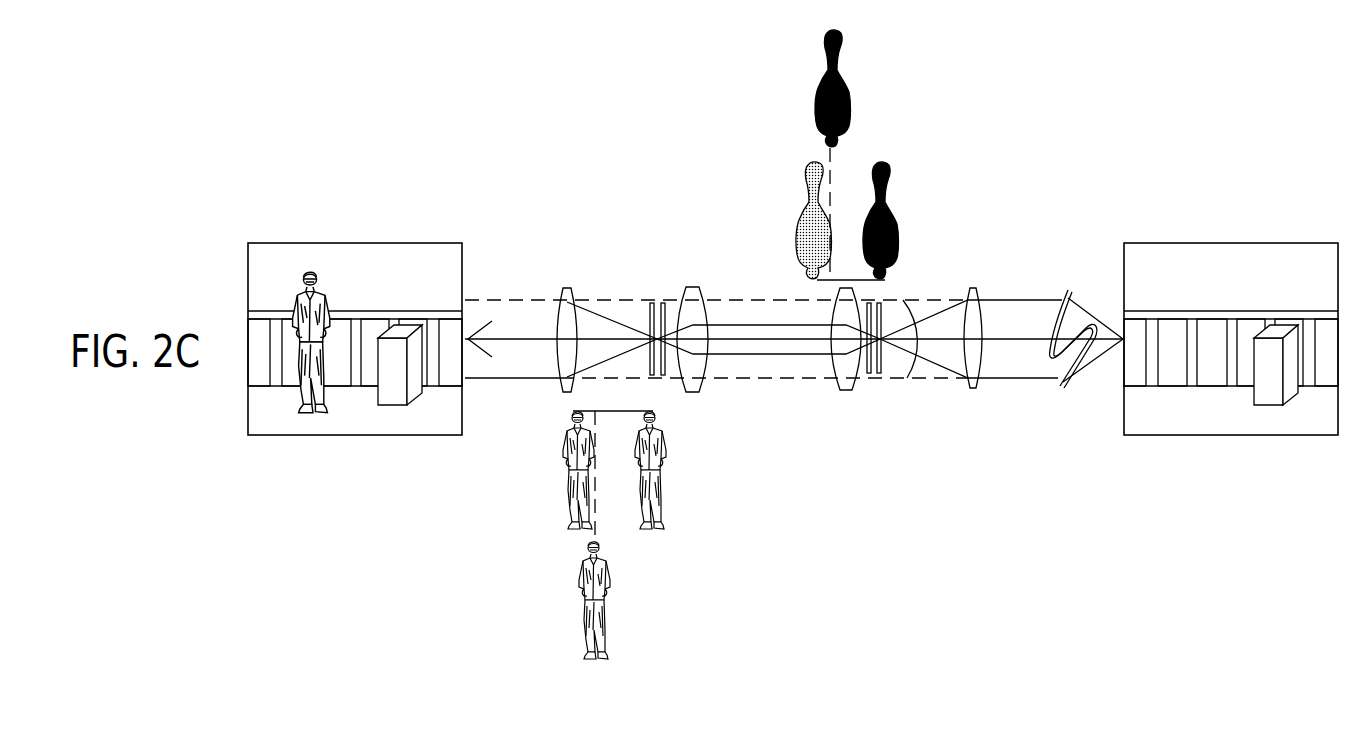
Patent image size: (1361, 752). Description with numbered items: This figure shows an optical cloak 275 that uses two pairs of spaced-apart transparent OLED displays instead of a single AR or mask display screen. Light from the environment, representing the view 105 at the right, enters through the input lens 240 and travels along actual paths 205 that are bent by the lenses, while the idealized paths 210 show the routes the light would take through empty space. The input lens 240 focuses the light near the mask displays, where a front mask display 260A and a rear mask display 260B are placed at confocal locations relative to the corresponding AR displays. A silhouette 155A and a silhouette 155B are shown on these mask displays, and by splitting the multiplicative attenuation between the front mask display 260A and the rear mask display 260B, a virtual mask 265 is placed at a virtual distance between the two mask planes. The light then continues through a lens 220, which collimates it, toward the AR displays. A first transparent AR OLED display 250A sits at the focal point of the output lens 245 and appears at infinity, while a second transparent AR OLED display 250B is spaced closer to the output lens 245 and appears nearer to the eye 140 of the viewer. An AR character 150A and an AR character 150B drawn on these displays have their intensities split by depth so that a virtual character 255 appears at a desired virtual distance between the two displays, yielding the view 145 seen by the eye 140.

The optical cloak 275 is at (547, 119).
The view 145 is at (302, 435).
The view 105 is at (1172, 435).
The eye 140 is at (469, 338).
The output lens 245 is at (567, 392).
The lens 220 is at (693, 392).
The input lens 240 is at (983, 353).
The idealized paths 210 is at (910, 380).
The actual paths 205 is at (964, 305).
The first transparent AR OLED display 250A is at (663, 303).
The second transparent AR OLED display 250B is at (652, 303).
The front mask display 260A is at (868, 303).
The rear mask display 260B is at (882, 318).
The virtual mask 265 is at (843, 38).
The silhouette 155A is at (892, 167).
The silhouette 155B is at (799, 235).
The AR character 150A is at (570, 495).
The AR character 150B is at (663, 478).
The virtual character 255 is at (607, 627).